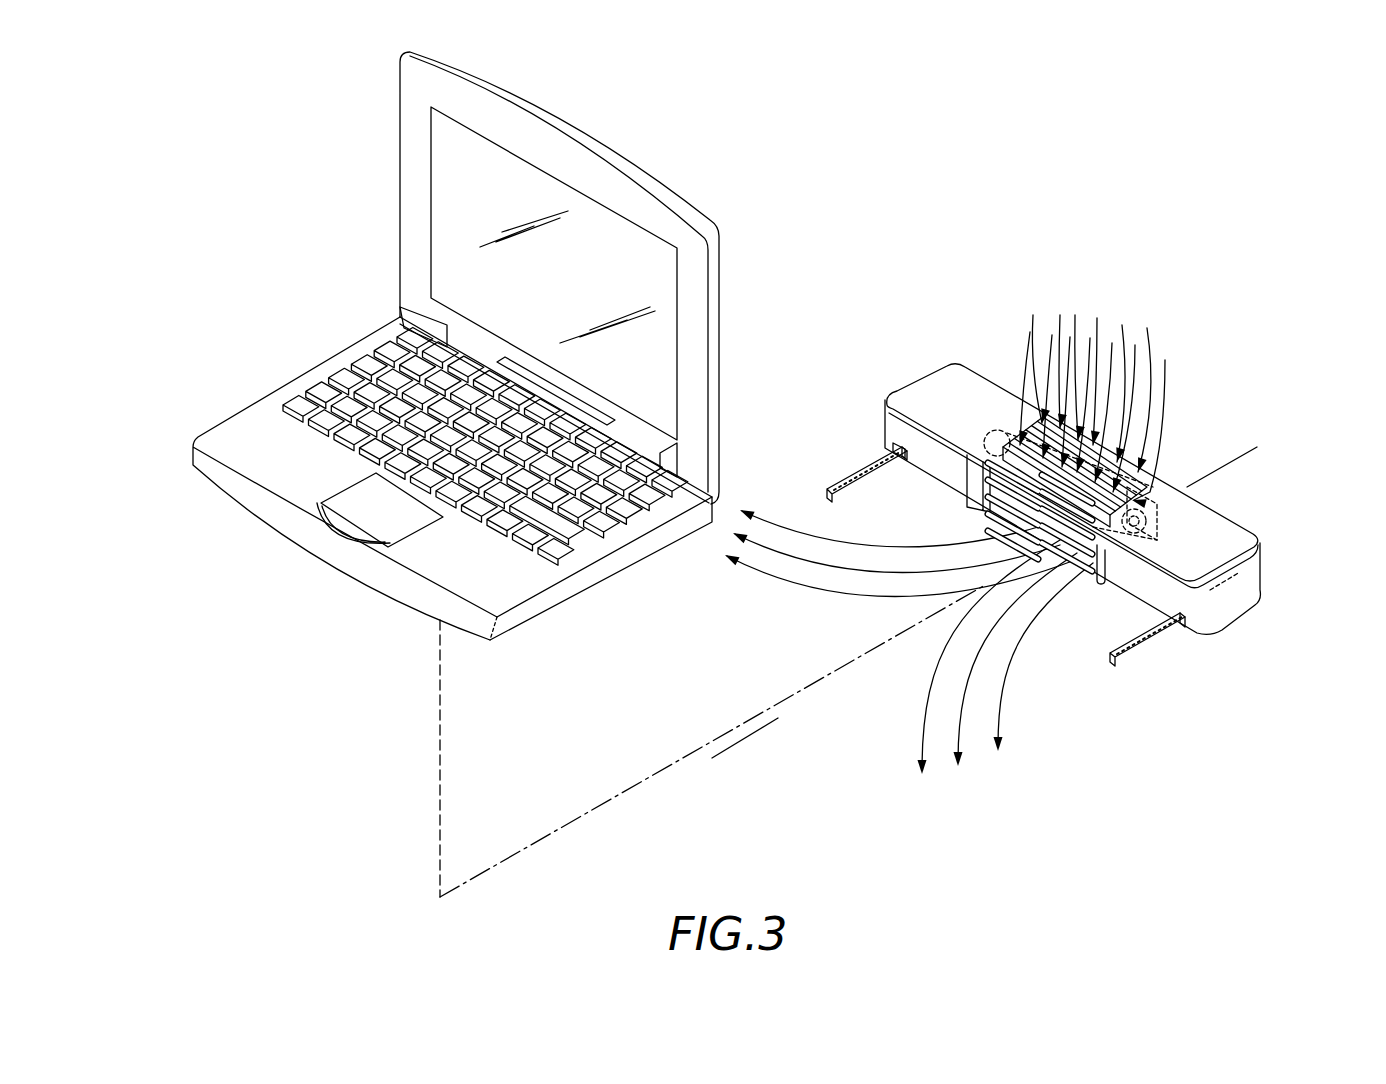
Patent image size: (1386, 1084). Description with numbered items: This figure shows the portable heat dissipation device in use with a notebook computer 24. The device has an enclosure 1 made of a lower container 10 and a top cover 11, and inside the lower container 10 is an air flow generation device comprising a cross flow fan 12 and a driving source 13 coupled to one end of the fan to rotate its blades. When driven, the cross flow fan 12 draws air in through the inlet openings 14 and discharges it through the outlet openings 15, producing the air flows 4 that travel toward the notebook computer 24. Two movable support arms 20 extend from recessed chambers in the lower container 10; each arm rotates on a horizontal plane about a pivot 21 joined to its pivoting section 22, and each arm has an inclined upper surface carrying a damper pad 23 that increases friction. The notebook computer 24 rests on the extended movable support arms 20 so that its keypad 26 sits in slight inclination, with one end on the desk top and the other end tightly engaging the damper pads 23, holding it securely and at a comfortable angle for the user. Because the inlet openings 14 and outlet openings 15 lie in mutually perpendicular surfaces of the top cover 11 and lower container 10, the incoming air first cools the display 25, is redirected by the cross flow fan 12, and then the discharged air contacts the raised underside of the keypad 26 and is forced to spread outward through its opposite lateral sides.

The enclosure 1 is at (1258, 378).
The airflow direction 4 is at (750, 742).
The lower container 10 is at (1242, 596).
The top cover 11 is at (932, 390).
The cross flow fan 12 is at (1230, 555).
The driving source 13 is at (995, 430).
The inlet openings 14 is at (1145, 490).
The outlet openings 15 is at (1092, 565).
The movable support arms 20 is at (857, 491).
The pivots 21 is at (912, 460).
The pivoting sections 22 is at (893, 447).
The damper pad 23 is at (848, 465).
The notebook computer 24 is at (297, 143).
The display 25 is at (415, 218).
The keypad 26 is at (235, 440).